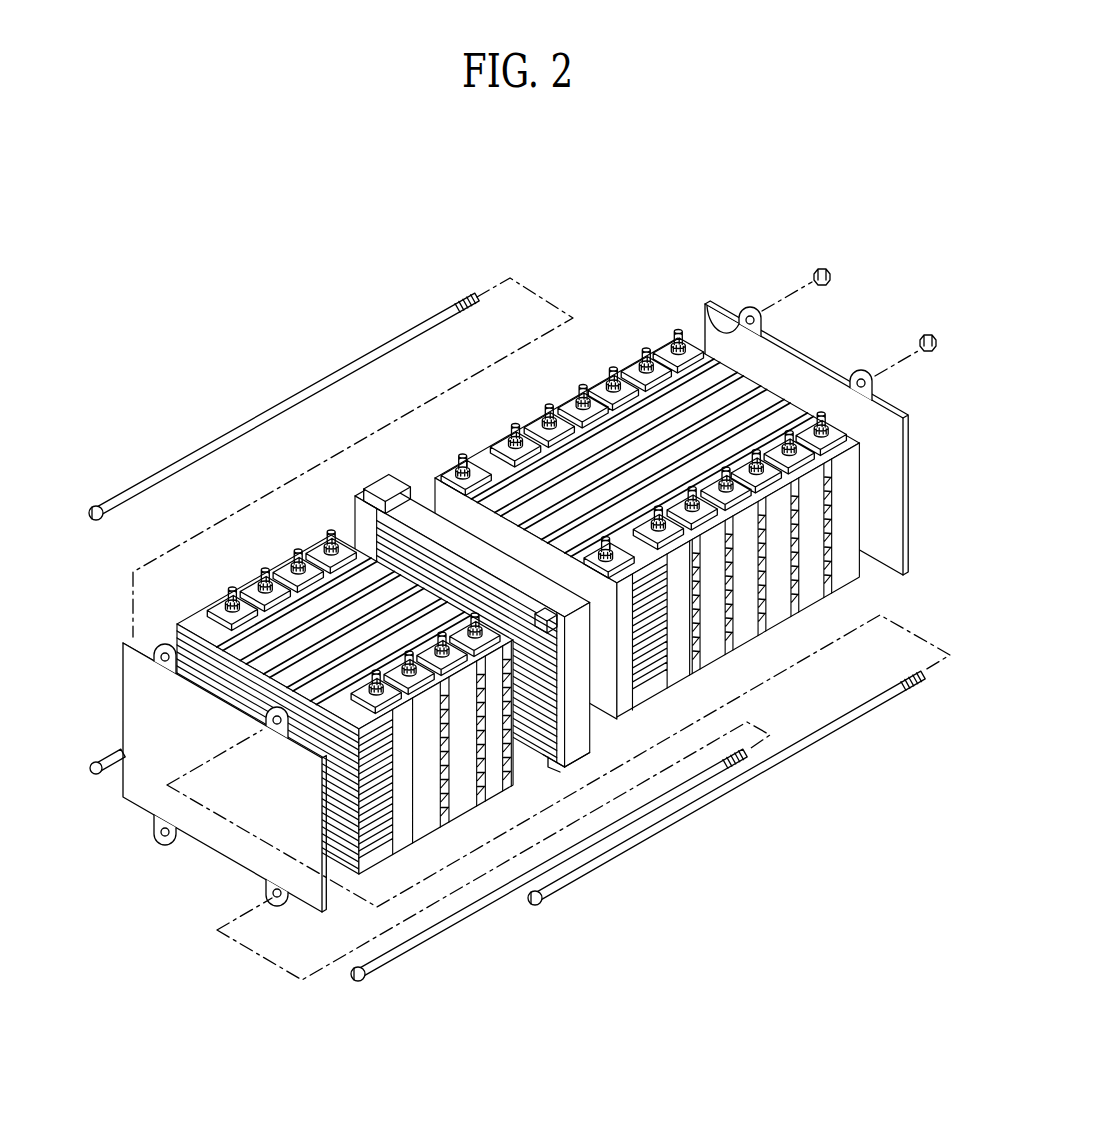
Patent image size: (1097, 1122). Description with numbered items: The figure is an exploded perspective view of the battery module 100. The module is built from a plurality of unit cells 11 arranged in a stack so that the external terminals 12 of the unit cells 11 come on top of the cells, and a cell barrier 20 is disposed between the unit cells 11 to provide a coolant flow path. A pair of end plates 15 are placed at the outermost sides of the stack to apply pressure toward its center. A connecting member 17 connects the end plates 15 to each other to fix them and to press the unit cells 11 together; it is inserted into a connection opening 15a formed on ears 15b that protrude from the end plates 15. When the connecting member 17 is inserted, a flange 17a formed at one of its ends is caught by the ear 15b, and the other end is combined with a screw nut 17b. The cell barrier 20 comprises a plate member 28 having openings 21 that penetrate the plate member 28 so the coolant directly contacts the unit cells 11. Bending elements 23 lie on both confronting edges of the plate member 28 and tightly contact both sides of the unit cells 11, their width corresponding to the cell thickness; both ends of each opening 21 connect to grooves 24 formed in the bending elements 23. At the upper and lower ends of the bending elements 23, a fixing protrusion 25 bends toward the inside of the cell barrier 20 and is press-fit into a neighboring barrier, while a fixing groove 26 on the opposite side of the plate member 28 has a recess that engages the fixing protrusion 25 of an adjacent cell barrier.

The battery module 100 is at (516, 208).
The unit cell 11 is at (486, 497).
The external terminal 12 is at (461, 468).
The end plate 15 is at (908, 450).
The connection opening 15a is at (706, 310).
The ear 15b is at (750, 307).
The connecting member 17 is at (290, 403).
The flange 17a is at (97, 505).
The screw nut 17b is at (831, 272).
The cell barrier 20 is at (375, 492).
The opening 21 is at (530, 722).
The bending element 23 is at (577, 687).
The groove 24 is at (572, 765).
The fixing protrusion 25 is at (590, 748).
The fixing groove 26 is at (378, 520).
The plate member 28 is at (391, 505).